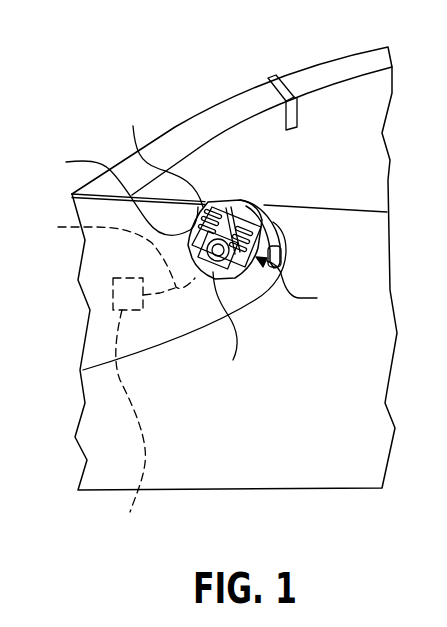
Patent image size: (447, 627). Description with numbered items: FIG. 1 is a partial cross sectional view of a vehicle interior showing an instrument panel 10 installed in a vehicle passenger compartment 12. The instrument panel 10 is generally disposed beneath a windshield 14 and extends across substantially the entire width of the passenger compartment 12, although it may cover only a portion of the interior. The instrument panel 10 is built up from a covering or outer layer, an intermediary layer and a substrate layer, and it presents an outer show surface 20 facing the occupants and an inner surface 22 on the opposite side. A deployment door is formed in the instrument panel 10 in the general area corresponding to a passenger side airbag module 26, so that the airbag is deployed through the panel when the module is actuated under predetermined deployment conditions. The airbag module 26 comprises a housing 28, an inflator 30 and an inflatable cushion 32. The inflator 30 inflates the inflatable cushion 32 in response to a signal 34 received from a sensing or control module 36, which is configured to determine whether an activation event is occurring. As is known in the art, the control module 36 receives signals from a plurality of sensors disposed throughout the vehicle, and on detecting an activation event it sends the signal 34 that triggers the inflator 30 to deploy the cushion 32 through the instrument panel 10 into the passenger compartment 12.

The instrument panel 10 is at (237, 202).
The vehicle passenger compartment 12 is at (357, 368).
The windshield 14 is at (238, 88).
The outer show surface 20 is at (276, 228).
The inner surface 22 is at (276, 264).
The passenger side airbag module 26 is at (298, 284).
The housing 28 is at (119, 190).
The inflator 30 is at (227, 328).
The inflatable cushion 32 is at (161, 153).
The signal 34 is at (114, 250).
The sensing or control module 36 is at (144, 408).